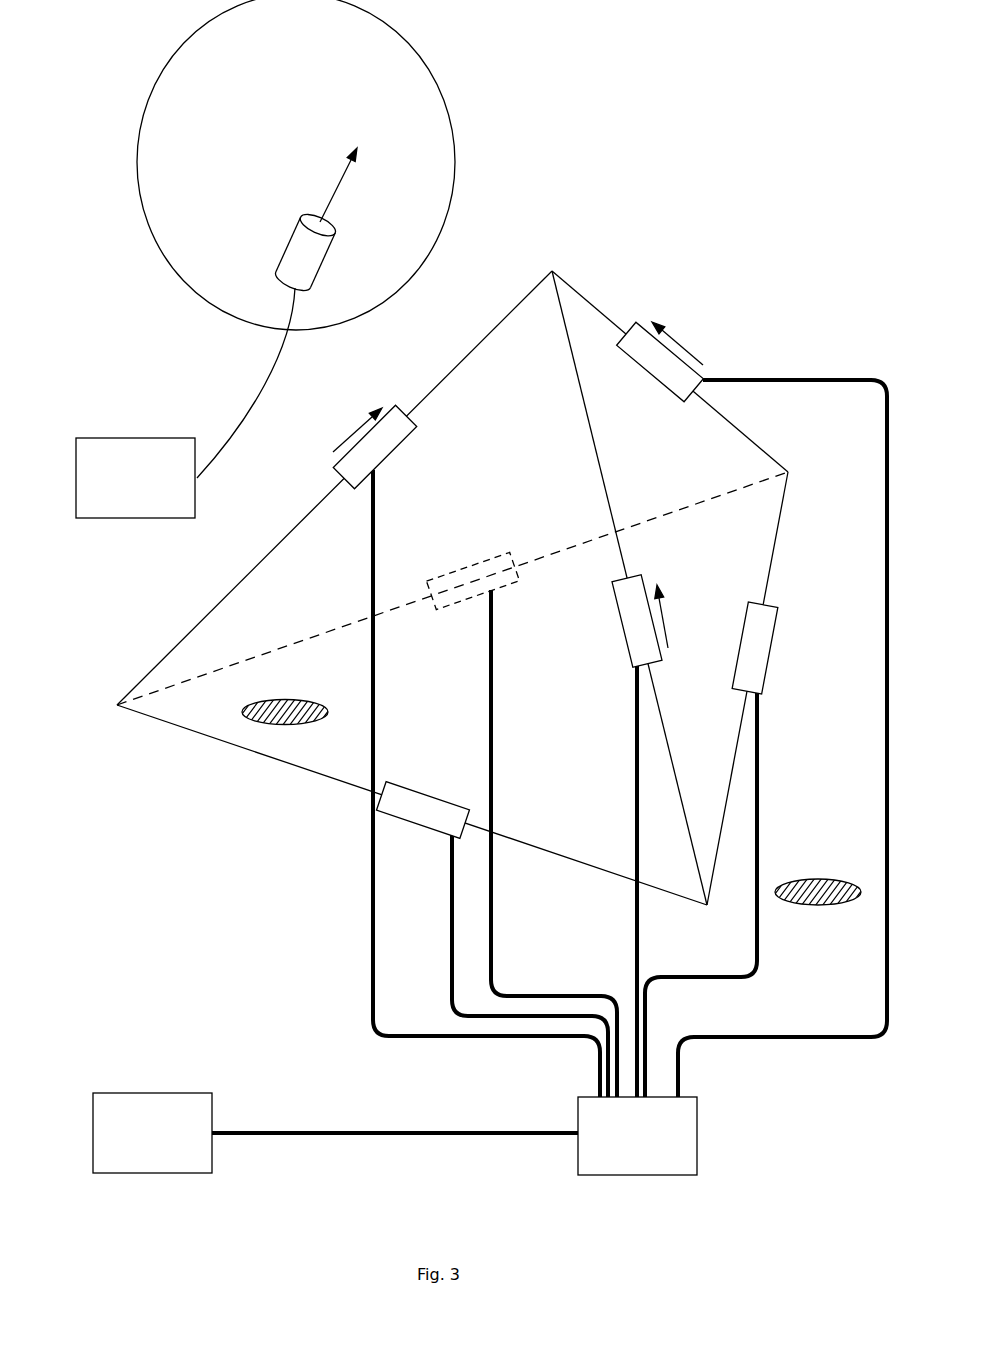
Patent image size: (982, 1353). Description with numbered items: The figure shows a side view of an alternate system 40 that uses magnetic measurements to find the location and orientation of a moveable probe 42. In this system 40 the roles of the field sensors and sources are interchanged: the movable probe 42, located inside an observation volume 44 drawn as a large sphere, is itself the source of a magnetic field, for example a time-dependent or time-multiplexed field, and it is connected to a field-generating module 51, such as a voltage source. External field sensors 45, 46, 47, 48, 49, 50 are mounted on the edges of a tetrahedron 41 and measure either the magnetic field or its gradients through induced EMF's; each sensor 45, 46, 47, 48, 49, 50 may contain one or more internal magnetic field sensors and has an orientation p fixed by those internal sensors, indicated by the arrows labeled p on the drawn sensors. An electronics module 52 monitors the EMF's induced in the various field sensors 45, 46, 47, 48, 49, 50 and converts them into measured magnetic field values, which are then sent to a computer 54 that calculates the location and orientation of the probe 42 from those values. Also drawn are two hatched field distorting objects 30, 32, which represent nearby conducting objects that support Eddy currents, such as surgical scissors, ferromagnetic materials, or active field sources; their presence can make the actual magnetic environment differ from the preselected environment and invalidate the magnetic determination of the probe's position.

The field distorting object 30 is at (295, 695).
The field distorting object 32 is at (833, 880).
The system 40 is at (790, 260).
The tetrahedron 41 is at (550, 271).
The moveable probe 42 is at (287, 257).
The observation volume 44 is at (296, 165).
The field sensor 45 is at (380, 448).
The field sensor 46 is at (668, 370).
The field sensor 47 is at (633, 620).
The field sensor 48 is at (500, 578).
The field sensor 49 is at (452, 818).
The field sensor 50 is at (757, 623).
The field-generating module 51 is at (143, 438).
The electronics module 52 is at (576, 1118).
The computer 54 is at (213, 1110).